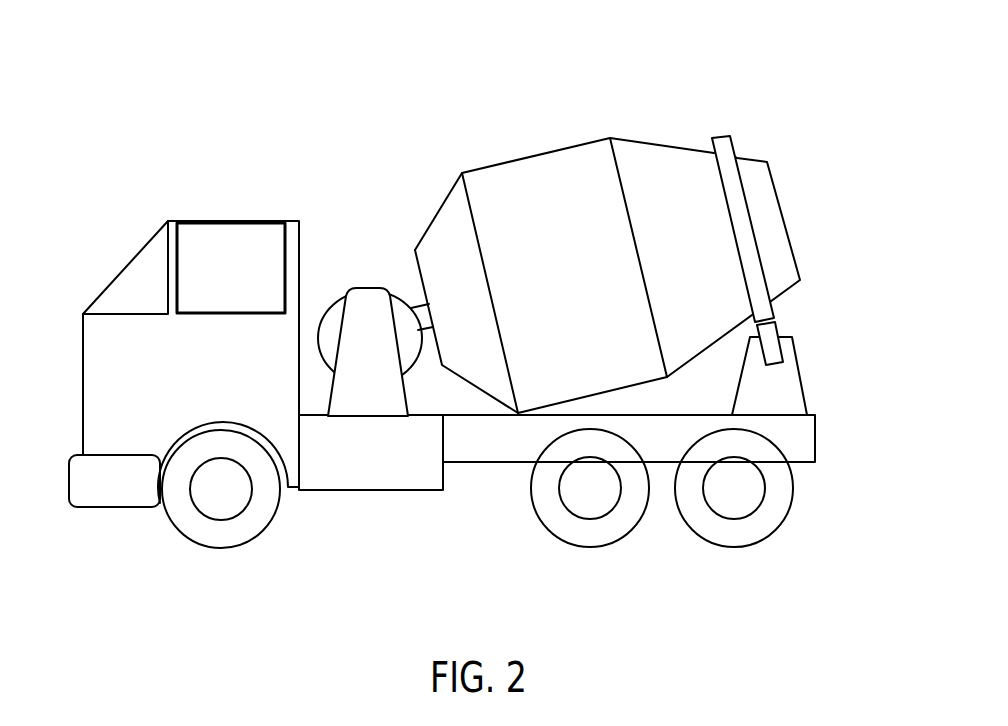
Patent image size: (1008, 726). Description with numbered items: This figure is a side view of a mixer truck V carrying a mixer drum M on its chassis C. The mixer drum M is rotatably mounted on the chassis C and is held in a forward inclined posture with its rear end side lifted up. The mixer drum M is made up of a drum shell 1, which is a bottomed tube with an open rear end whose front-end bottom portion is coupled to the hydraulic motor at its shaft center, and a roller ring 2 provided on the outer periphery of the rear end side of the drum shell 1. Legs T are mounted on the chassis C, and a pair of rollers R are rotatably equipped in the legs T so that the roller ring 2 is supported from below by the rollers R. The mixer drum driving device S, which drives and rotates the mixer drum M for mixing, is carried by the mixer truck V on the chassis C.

The drum shell 1 is at (609, 139).
The roller ring 2 is at (719, 137).
The mixer drum M is at (760, 158).
The mixer truck V is at (137, 225).
The mixer drum driving device S is at (380, 268).
The rollers R is at (778, 333).
The legs T is at (792, 377).
The chassis C is at (809, 452).